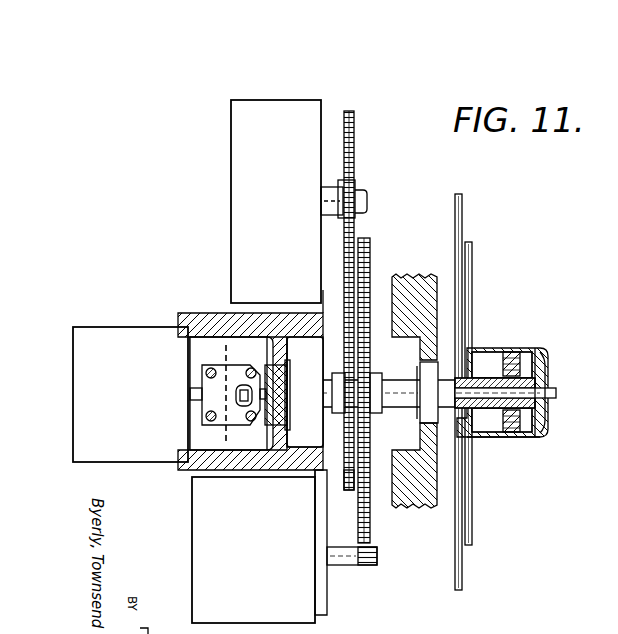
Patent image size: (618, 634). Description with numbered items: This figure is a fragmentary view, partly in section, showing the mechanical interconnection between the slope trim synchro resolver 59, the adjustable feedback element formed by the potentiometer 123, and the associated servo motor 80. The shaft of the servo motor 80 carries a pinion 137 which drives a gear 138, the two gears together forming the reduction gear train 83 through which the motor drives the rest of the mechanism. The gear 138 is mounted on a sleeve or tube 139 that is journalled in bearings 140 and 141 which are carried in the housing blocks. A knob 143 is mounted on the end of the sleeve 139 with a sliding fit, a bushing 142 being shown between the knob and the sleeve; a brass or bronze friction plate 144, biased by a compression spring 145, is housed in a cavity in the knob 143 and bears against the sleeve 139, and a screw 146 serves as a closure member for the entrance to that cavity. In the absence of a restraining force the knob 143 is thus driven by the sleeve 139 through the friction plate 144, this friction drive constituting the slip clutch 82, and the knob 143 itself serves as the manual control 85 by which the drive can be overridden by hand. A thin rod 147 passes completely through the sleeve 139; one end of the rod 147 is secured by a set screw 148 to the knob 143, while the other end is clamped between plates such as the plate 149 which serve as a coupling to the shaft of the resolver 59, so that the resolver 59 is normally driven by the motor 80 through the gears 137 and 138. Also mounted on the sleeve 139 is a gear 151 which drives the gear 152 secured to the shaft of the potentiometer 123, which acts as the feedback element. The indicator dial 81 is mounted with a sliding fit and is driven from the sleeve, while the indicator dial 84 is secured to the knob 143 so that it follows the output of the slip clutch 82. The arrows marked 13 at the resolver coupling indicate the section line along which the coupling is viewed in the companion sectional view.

The section line indicator 13 is at (208, 350).
The synchro resolver 59 is at (130, 394).
The servo motor 80 is at (253, 550).
The indicator dial 81 is at (462, 215).
The slip clutch 82 is at (510, 440).
The gear train 83 is at (384, 223).
The indicator dial 84 is at (472, 279).
The manual control 85 is at (525, 360).
The potentiometer 123 is at (276, 201).
The pinion 137 is at (377, 556).
The gear 138 is at (370, 531).
The sleeve or tube 139 is at (398, 382).
The bearing 140 is at (303, 362).
The bearing 141 is at (418, 423).
The bushing 142 is at (481, 349).
The knob 143 is at (537, 438).
The friction plate 144 is at (533, 409).
The compression spring 145 is at (540, 423).
The screw 146 is at (513, 350).
The thin rod 147 is at (287, 395).
The set screw 148 is at (545, 354).
The plate 149 is at (232, 417).
The gear 151 is at (350, 492).
The gear 152 is at (353, 137).